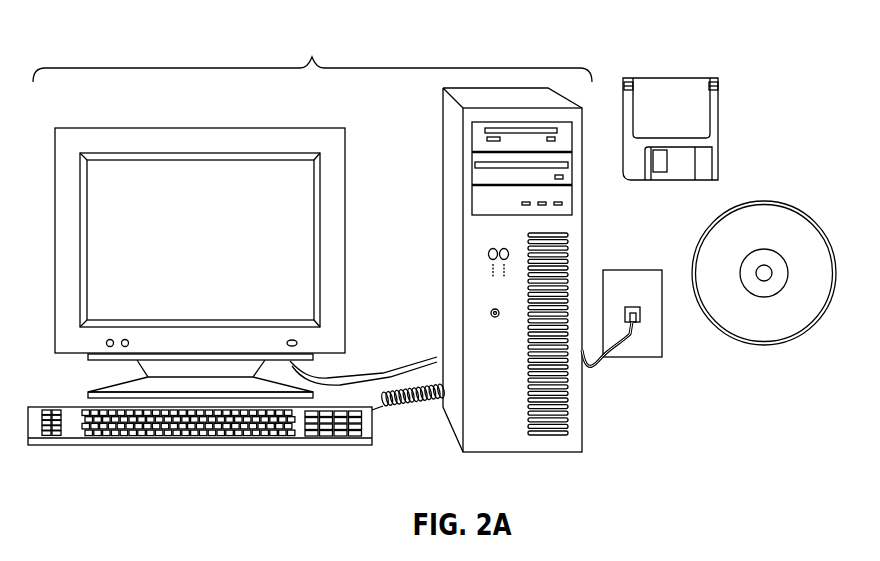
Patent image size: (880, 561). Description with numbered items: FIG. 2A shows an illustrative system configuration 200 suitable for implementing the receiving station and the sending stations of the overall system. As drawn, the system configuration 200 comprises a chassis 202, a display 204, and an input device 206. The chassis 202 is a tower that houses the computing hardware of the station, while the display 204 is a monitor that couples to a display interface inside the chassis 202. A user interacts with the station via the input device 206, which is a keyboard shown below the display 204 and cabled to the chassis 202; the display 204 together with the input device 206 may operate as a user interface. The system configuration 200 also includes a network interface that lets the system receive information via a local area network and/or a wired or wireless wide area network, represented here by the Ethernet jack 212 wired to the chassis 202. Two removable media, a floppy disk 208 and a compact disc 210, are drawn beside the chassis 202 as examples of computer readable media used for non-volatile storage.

The system configuration 200 is at (312, 59).
The chassis 202 is at (442, 304).
The display 204 is at (74, 354).
The input device 206 is at (68, 445).
The floppy disk 208 is at (721, 159).
The compact disc 210 is at (779, 202).
The Ethernet jack 212 is at (625, 270).